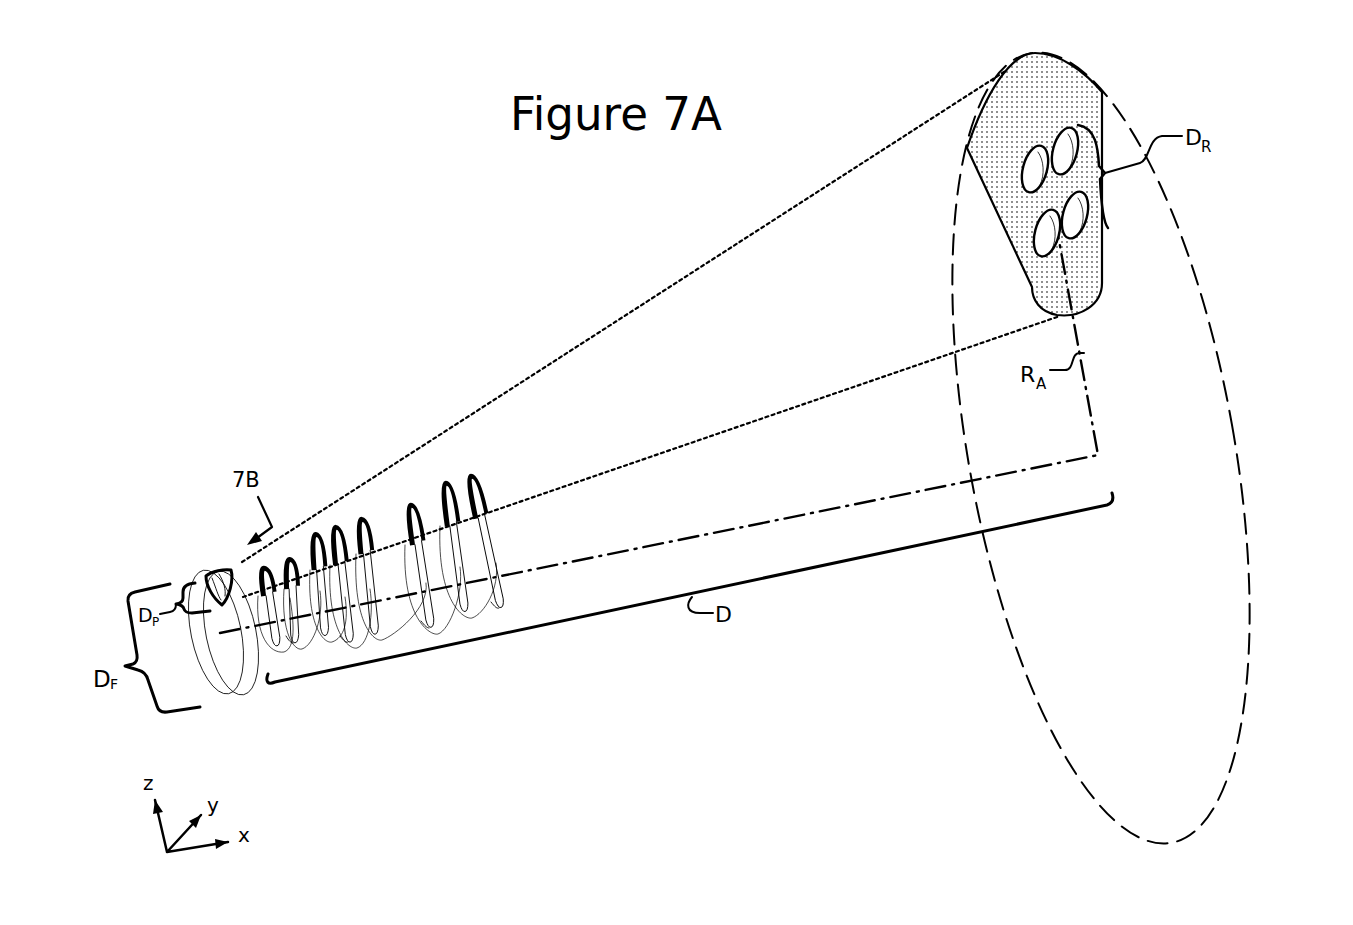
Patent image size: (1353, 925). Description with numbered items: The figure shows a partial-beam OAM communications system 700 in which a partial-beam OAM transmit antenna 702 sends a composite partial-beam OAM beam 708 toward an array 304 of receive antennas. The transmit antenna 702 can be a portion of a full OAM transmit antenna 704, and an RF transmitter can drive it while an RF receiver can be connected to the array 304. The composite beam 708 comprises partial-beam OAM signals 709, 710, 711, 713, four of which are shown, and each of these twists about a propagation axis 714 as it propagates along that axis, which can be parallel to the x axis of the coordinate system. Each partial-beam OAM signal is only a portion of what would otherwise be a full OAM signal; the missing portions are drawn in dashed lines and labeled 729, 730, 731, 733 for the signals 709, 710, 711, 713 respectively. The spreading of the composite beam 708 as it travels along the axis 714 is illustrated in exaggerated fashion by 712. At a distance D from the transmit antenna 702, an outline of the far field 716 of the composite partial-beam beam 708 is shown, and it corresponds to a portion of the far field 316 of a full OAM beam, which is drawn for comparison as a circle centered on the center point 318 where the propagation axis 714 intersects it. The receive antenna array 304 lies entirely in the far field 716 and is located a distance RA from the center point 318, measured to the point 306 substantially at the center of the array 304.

The array of receive antennas 304 is at (1054, 100).
The point at the center of the array 306 is at (1050, 190).
The far field of a full OAM beam 316 is at (952, 306).
The center point 318 is at (1103, 449).
The partial-beam OAM communications system 700 is at (480, 301).
The partial-beam OAM transmit antenna 702 is at (207, 574).
The full OAM transmit antenna 704 is at (242, 697).
The composite partial-beam OAM beam 708 is at (513, 420).
The partial-beam OAM signal 709 is at (288, 556).
The partial-beam OAM signal 710 is at (334, 525).
The partial-beam OAM signal 711 is at (410, 503).
The spreading of the composite partial-beam OAM beam 712 is at (787, 205).
The partial-beam OAM signal 713 is at (478, 487).
The propagation axis 714 is at (810, 513).
The far field of the composite partial-beam OAM beam 716 is at (1010, 83).
The missing portion of the full OAM signal 729 is at (291, 644).
The missing portion of the full OAM signal 730 is at (349, 642).
The missing portion of the full OAM signal 731 is at (428, 627).
The missing portion of the full OAM signal 733 is at (498, 608).